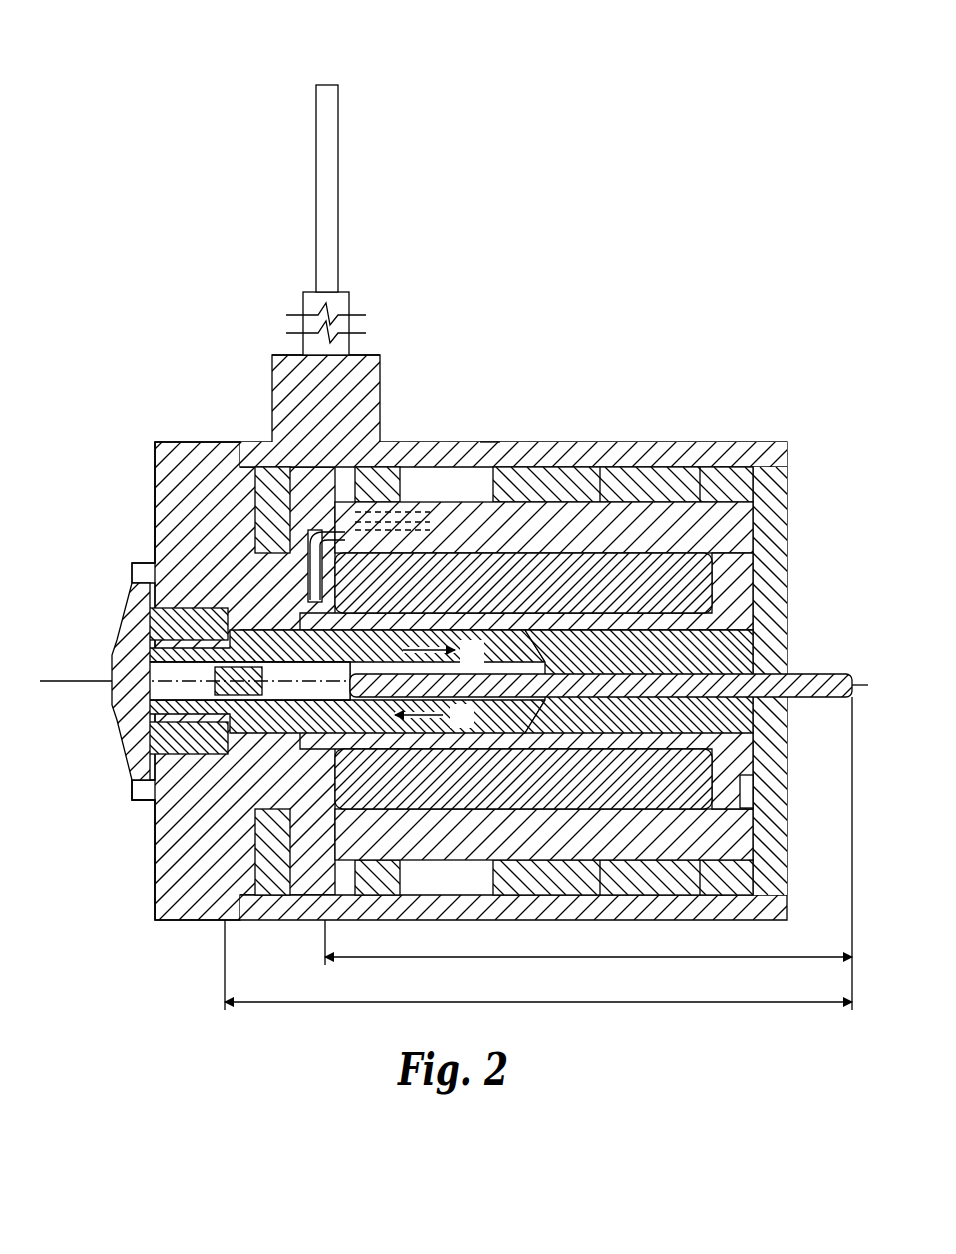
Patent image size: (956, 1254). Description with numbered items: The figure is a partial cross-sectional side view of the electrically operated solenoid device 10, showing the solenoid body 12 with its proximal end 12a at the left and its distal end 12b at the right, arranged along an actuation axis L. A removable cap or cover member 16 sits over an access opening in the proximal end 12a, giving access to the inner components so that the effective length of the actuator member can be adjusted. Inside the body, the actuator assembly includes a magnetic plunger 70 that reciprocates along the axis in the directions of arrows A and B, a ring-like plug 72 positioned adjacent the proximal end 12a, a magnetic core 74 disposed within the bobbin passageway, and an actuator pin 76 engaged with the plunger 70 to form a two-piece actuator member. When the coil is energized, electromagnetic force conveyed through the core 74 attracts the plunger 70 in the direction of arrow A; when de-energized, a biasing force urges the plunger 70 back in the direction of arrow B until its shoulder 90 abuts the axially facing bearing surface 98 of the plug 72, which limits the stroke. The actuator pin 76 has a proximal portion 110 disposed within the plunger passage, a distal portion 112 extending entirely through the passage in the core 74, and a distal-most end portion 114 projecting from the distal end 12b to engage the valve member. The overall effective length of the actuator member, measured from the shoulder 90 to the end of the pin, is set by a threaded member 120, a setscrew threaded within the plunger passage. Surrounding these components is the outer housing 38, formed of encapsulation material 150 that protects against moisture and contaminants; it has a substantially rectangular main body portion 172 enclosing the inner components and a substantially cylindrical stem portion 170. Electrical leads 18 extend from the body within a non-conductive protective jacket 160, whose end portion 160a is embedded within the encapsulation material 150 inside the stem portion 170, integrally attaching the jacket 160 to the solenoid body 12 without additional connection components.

The electrically operated solenoid device 10 is at (157, 122).
The solenoid body 12 is at (593, 382).
The proximal end 12a is at (157, 493).
The distal end 12b is at (790, 495).
The cap or cover member 16 is at (103, 757).
The electrical leads 18 is at (355, 182).
The outer housing 38 is at (683, 420).
The plunger 70 is at (457, 615).
The plug 72 is at (165, 752).
The core 74 is at (720, 640).
The actuator pin 76 is at (635, 665).
The shoulder 90 is at (160, 866).
The bearing surface 98 is at (200, 815).
The proximal portion 110 is at (493, 640).
The distal portion 112 is at (680, 667).
The distal-most end portion 114 is at (820, 670).
The threaded member 120 is at (247, 635).
The encapsulation material 150 is at (182, 483).
The protective jacket 160 is at (352, 302).
The end portion 160a is at (382, 362).
The stem portion 170 is at (385, 400).
The main body portion 172 is at (490, 440).